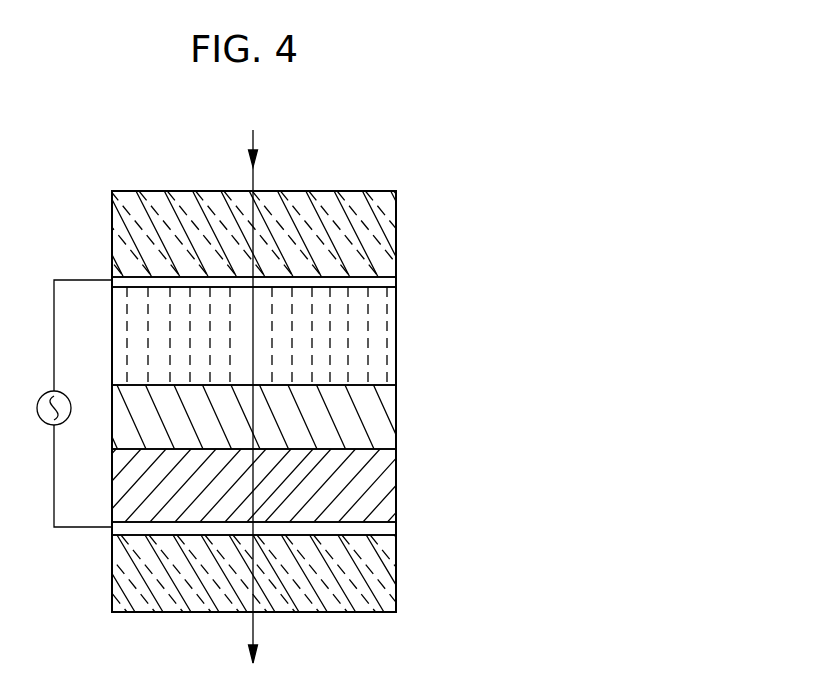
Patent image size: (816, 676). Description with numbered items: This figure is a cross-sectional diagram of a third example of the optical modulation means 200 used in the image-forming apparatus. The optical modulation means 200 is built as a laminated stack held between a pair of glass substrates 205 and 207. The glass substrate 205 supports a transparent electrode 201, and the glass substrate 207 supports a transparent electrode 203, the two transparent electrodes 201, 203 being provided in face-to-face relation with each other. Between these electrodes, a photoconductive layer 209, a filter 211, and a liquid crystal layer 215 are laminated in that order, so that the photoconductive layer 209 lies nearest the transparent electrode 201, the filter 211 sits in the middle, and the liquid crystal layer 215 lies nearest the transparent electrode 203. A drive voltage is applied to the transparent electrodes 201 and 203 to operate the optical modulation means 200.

The optical modulation means 200 is at (338, 172).
The transparent electrode 201 is at (396, 530).
The transparent electrode 203 is at (396, 280).
The glass substrate 205 is at (396, 585).
The glass substrate 207 is at (396, 232).
The photoconductive layer 209 is at (396, 487).
The filter 211 is at (396, 418).
The liquid crystal layer 215 is at (396, 338).